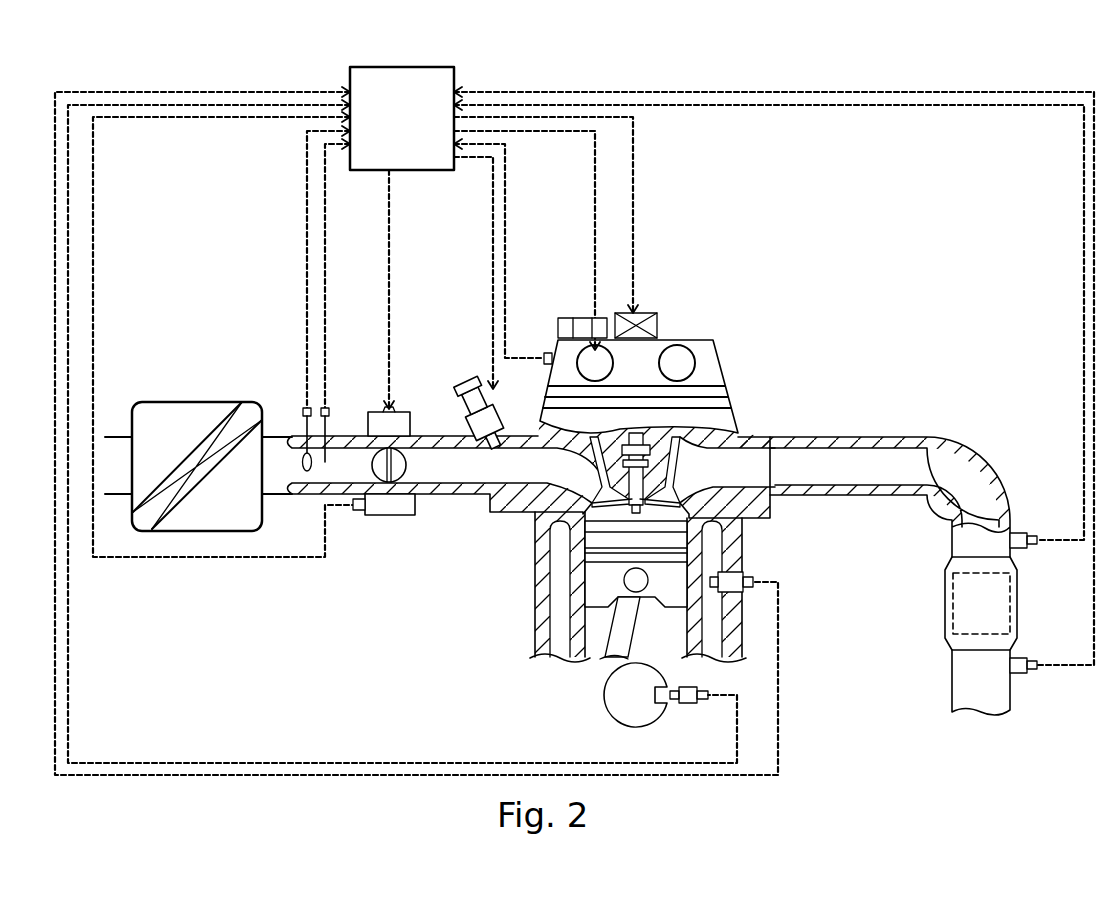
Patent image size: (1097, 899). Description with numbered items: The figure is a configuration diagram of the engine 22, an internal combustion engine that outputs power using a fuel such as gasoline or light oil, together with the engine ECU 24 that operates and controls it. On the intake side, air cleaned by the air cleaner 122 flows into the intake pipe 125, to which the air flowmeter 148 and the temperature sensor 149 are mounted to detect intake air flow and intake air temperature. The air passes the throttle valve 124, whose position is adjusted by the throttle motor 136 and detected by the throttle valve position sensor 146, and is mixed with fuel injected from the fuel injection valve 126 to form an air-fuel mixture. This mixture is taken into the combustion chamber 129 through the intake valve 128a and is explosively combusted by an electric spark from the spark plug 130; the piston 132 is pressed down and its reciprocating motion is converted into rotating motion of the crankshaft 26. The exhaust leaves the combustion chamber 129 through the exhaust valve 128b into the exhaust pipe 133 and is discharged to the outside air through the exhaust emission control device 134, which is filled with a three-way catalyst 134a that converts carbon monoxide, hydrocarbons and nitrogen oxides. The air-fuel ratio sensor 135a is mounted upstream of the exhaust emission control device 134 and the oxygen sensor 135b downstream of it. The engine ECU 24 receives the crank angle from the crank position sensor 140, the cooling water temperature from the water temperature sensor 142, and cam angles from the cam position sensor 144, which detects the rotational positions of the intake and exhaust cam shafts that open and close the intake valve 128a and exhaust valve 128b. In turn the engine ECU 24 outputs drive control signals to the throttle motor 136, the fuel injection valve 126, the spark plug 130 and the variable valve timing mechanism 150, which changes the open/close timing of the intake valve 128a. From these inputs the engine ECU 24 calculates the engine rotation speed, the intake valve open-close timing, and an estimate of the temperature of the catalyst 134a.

The engine electronic control unit 24 is at (428, 67).
The engine 22 is at (729, 265).
The air cleaner 122 is at (200, 402).
The air flowmeter 148 is at (302, 412).
The temperature sensor 149 is at (331, 412).
The throttle motor 136 is at (377, 410).
The throttle valve 124 is at (403, 452).
The fuel injection valve 126 is at (462, 392).
The throttle valve position sensor 146 is at (395, 516).
The intake pipe 125 is at (472, 495).
The cam position sensor 144 is at (548, 352).
The variable valve timing mechanism 150 is at (588, 348).
The exhaust pipe 133 is at (858, 437).
The intake valve 128a is at (597, 490).
The exhaust valve 128b is at (676, 486).
The spark plug 130 is at (640, 485).
The combustion chamber 129 is at (766, 512).
The piston 132 is at (598, 576).
The water temperature sensor 142 is at (747, 572).
The crankshaft 26 is at (604, 695).
The crank position sensor 140 is at (690, 704).
The exhaust emission control device 134 is at (946, 590).
The catalyst 134a is at (946, 615).
The air-fuel ratio sensor 135a is at (1023, 532).
The oxygen sensor 135b is at (1023, 675).